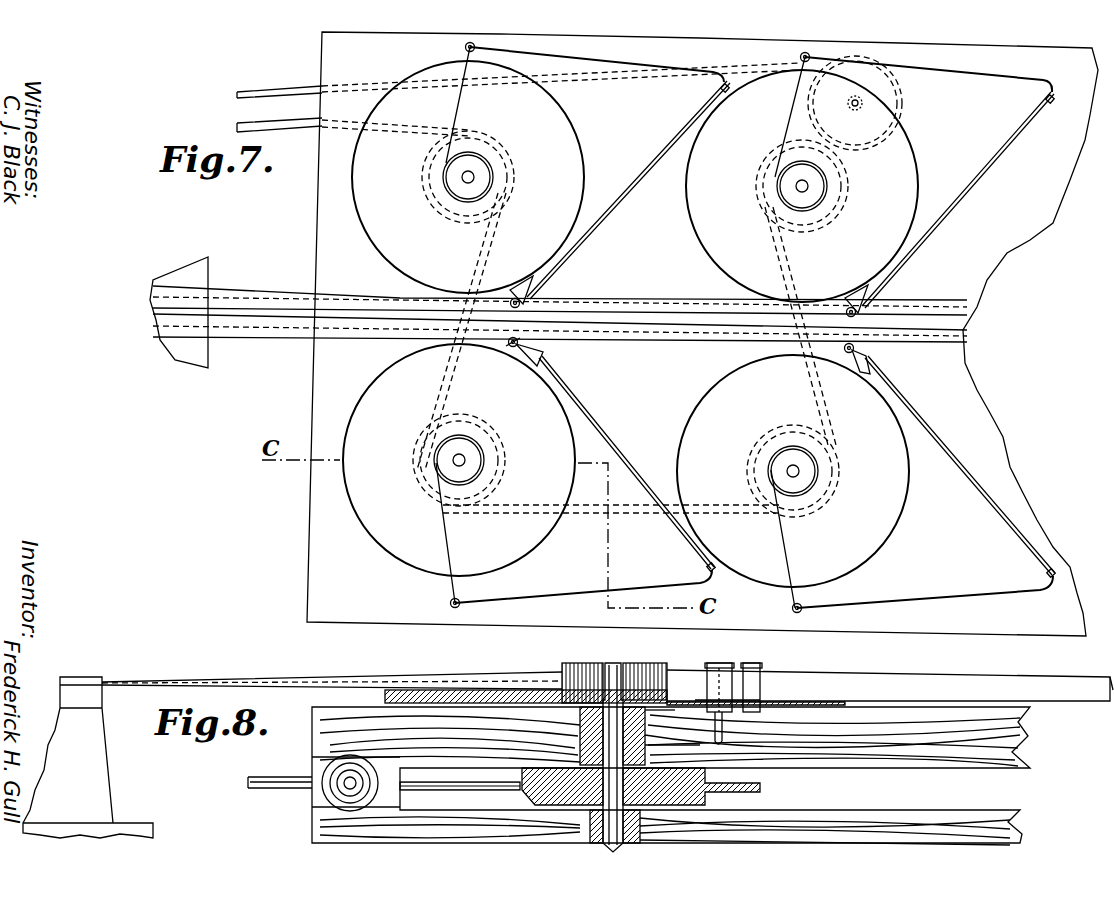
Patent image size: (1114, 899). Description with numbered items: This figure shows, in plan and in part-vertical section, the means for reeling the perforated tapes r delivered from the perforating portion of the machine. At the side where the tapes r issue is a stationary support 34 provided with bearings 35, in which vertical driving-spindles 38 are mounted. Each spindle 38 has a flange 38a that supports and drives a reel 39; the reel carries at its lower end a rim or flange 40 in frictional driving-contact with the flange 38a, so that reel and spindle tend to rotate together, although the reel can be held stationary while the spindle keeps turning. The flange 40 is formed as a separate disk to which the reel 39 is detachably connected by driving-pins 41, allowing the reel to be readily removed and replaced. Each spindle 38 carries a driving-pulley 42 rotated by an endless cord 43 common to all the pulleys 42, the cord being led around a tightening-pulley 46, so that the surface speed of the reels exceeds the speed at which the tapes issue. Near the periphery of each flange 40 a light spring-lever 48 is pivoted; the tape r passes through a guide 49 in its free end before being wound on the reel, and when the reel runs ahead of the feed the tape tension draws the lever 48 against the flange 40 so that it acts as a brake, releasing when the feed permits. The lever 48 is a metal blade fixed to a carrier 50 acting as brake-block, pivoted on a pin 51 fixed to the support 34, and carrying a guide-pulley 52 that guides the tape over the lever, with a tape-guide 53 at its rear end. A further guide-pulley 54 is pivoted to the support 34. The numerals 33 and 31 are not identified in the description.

In FIG. 7, the stationary support 34 is at (702, 334).
In FIG. 8, the stationary support 34 is at (1000, 835).
In FIG. 7, the rim or flange 40 is at (630, 324).
In FIG. 8, the rim or flange 40 is at (828, 701).
In FIG. 7, the reel 39 is at (464, 200).
In FIG. 8, the reel 39 is at (568, 675).
In FIG. 7, the vertical driving-spindle 38 is at (474, 178).
In FIG. 8, the vertical driving-spindle 38 is at (645, 728).
In FIG. 7, the driving-pins 41 is at (445, 195).
In FIG. 8, the driving-pins 41 is at (548, 699).
In FIG. 7, the driving-pulley 42 is at (512, 168).
In FIG. 8, the driving-pulley 42 is at (641, 786).
In FIG. 7, the endless cord 43 is at (284, 90).
In FIG. 8, the endless cord 43 is at (272, 786).
In FIG. 7, the tightening-pulley 46 is at (890, 98).
In FIG. 7, the spring-lever 48 is at (966, 482).
In FIG. 8, the spring-lever 48 is at (888, 685).
In FIG. 7, the guide 49 is at (1050, 103).
In FIG. 8, the guide 49 is at (1095, 708).
In FIG. 7, the carrier 50 is at (866, 307).
In FIG. 8, the carrier 50 is at (740, 681).
In FIG. 7, the pin 51 is at (512, 345).
In FIG. 8, the pin 51 is at (724, 722).
In FIG. 7, the guide-pulley 52 is at (527, 303).
In FIG. 8, the guide-pulley 52 is at (724, 687).
In FIG. 7, the tape-guide 53 is at (545, 338).
In FIG. 7, the guide-pulley 54 is at (438, 606).
In FIG. 7, the perforated tapes r is at (297, 303).
In FIG. 8, the perforated tapes r is at (160, 684).
In FIG. 8, the bearings 35 is at (595, 736).
In FIG. 8, the flange 38a is at (675, 722).
In FIG. 8, the block 33 is at (625, 745).
In FIG. 8, the lower bearing 31 is at (588, 826).